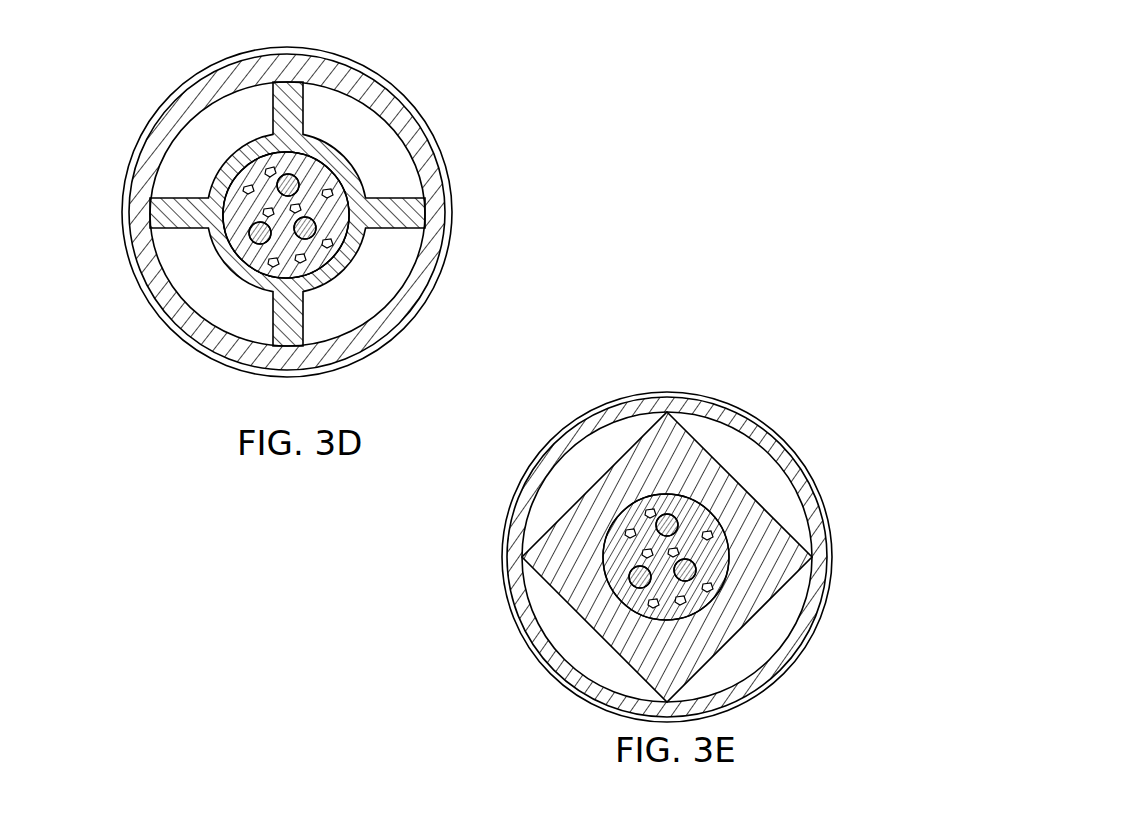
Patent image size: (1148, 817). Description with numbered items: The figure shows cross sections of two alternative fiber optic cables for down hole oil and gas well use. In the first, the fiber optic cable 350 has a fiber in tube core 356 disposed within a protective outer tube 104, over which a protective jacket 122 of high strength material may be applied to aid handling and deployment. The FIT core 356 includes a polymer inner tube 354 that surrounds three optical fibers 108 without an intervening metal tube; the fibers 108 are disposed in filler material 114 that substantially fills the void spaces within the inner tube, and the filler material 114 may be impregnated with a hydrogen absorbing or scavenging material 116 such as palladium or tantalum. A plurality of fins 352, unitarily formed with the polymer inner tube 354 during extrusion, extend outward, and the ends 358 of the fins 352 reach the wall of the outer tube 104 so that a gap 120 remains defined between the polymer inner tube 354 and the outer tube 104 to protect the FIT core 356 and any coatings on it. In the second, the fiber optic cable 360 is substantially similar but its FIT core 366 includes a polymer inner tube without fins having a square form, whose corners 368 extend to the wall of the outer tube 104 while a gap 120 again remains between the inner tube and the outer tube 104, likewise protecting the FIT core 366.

In FIG. 3D, the outer tube 104 is at (440, 268).
In FIG. 3E, the outer tube 104 is at (760, 440).
In FIG. 3D, the optical fiber 108 is at (260, 246).
In FIG. 3E, the optical fiber 108 is at (636, 582).
In FIG. 3D, the filler material 114 is at (246, 187).
In FIG. 3E, the filler material 114 is at (714, 558).
In FIG. 3D, the hydrogen absorbing/scavenging material 116 is at (247, 193).
In FIG. 3E, the hydrogen absorbing/scavenging material 116 is at (710, 590).
In FIG. 3D, the gap 120 is at (360, 140).
In FIG. 3E, the gap 120 is at (560, 476).
In FIG. 3D, the protective jacket 122 is at (377, 353).
In FIG. 3E, the protective jacket 122 is at (690, 398).
In FIG. 3D, the fiber optic cable 350 is at (330, 217).
In FIG. 3D, the fins 352 is at (446, 265).
In FIG. 3D, the polymer inner tube 354 is at (333, 277).
In FIG. 3D, the FIT core 356 is at (358, 193).
In FIG. 3D, the ends of the fins 358 is at (422, 203).
In FIG. 3E, the fiber optic cable 360 is at (704, 494).
In FIG. 3E, the FIT core 366 is at (762, 508).
In FIG. 3E, the corners 368 is at (812, 557).